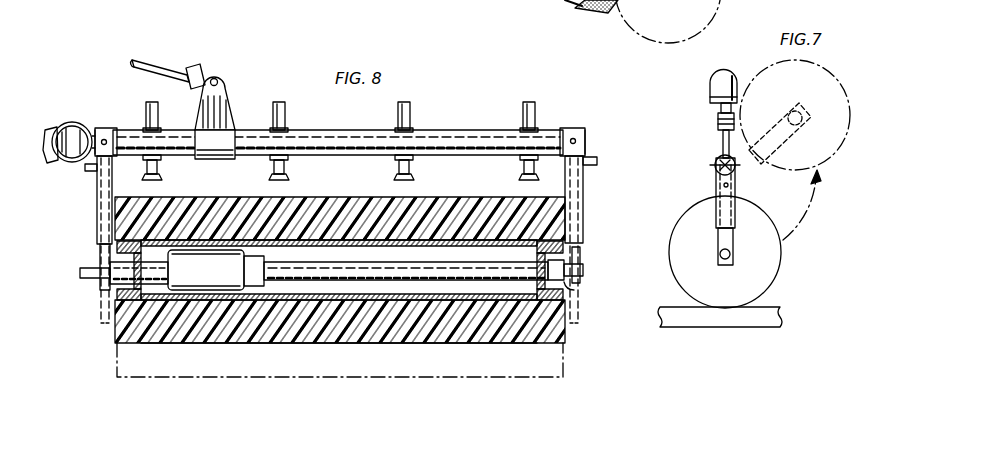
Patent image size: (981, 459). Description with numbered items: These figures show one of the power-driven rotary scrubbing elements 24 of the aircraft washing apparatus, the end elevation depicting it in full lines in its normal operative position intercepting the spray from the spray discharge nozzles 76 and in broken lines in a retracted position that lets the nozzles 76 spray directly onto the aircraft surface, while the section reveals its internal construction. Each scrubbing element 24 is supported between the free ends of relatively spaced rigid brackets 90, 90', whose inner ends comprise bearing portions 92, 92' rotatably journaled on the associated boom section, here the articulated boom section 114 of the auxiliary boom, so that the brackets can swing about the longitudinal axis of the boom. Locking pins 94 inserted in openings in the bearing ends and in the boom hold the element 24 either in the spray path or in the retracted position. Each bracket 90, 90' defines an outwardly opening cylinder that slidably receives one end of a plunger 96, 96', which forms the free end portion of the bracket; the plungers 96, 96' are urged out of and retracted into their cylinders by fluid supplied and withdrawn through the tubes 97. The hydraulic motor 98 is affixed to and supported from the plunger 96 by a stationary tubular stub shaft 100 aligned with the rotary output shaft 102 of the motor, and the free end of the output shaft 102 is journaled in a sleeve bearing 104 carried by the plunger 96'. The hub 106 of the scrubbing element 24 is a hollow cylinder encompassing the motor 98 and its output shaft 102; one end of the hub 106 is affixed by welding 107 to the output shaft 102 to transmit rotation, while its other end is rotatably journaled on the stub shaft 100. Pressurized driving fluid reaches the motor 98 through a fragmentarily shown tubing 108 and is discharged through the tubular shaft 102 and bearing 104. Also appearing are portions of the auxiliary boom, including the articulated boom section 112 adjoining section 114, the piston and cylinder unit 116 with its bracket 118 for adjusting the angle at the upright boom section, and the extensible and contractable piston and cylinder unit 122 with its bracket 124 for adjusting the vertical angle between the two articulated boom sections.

In FIG. 8, the rotary scrubbing element 24 is at (263, 352).
In FIG. 7, the rotary scrubbing element 24 is at (783, 265).
In FIG. 8, the spray discharge nozzle 76 is at (395, 174).
In FIG. 8, the rigid bracket 90 is at (83, 239).
In FIG. 8, the rigid bracket 90' is at (597, 239).
In FIG. 7, the rigid bracket 90' is at (699, 193).
In FIG. 8, the bearing portion 92 is at (111, 118).
In FIG. 8, the bearing portion 92' is at (591, 115).
In FIG. 8, the locking pin 94 is at (103, 140).
In FIG. 8, the plunger 96 is at (80, 263).
In FIG. 8, the plunger 96' is at (606, 268).
In FIG. 7, the plunger 96' is at (735, 263).
In FIG. 8, the tube 97 is at (86, 168).
In FIG. 8, the hydraulic motor 98 is at (375, 270).
In FIG. 8, the stationary tubular stub shaft 100 is at (128, 278).
In FIG. 8, the rotary output shaft 102 is at (383, 280).
In FIG. 8, the sleeve bearing 104 is at (576, 291).
In FIG. 8, the hub 106 is at (357, 336).
In FIG. 8, the welding 107 is at (522, 340).
In FIG. 8, the tubing 108 is at (89, 279).
In FIG. 8, the articulated boom section 112 is at (54, 130).
In FIG. 8, the articulated boom section 114 is at (350, 130).
In FIG. 8, the piston and cylinder unit 116 is at (143, 61).
In FIG. 8, the bracket 118 is at (227, 105).
In FIG. 7, the piston and cylinder unit 122 is at (714, 82).
In FIG. 7, the bracket 124 is at (716, 149).